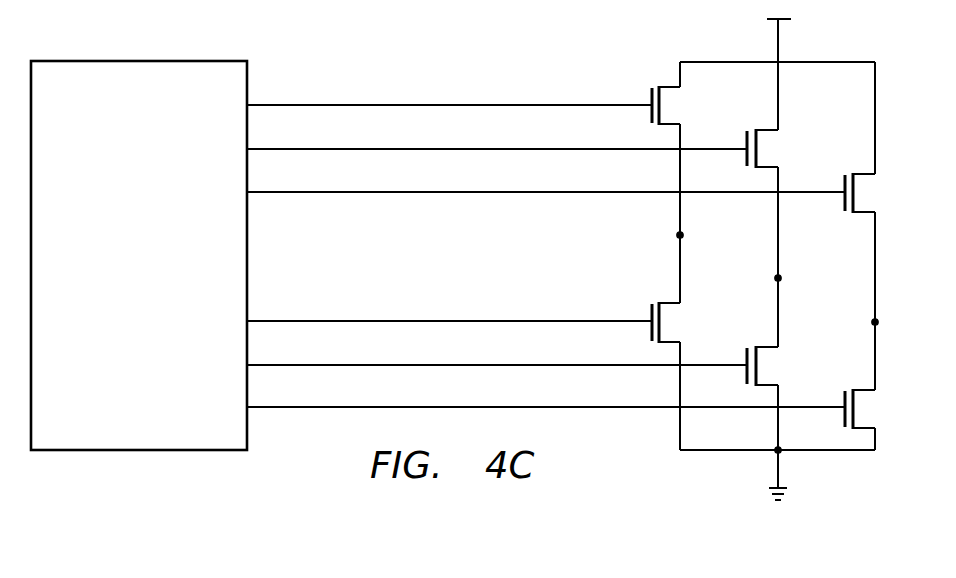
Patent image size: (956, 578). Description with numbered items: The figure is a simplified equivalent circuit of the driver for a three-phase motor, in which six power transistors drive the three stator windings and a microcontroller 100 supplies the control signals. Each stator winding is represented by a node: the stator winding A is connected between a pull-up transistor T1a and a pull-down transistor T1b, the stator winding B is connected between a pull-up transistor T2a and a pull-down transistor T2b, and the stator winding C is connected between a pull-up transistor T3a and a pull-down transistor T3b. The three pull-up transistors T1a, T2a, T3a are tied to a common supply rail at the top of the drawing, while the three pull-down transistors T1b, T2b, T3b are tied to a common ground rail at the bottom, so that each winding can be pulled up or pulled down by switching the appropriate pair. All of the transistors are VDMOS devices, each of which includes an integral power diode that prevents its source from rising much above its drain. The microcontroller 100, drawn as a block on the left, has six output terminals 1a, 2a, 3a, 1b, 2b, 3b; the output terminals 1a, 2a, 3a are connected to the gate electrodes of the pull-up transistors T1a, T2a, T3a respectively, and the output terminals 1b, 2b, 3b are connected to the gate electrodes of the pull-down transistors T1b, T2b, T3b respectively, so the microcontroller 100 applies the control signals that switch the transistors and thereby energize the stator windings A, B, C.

The microcontroller 100 is at (138, 61).
The output terminal 1a is at (435, 106).
The output terminal 2a is at (482, 150).
The output terminal 3a is at (531, 193).
The output terminal 1b is at (435, 322).
The output terminal 2b is at (482, 366).
The output terminal 3b is at (531, 408).
The pull-up transistor T1a is at (645, 99).
The pull-up transistor T2a is at (742, 142).
The pull-up transistor T3a is at (839, 188).
The pull-down transistor T1b is at (645, 318).
The pull-down transistor T2b is at (742, 361).
The pull-down transistor T3b is at (839, 404).
The stator winding A is at (689, 236).
The stator winding B is at (787, 279).
The stator winding C is at (884, 323).